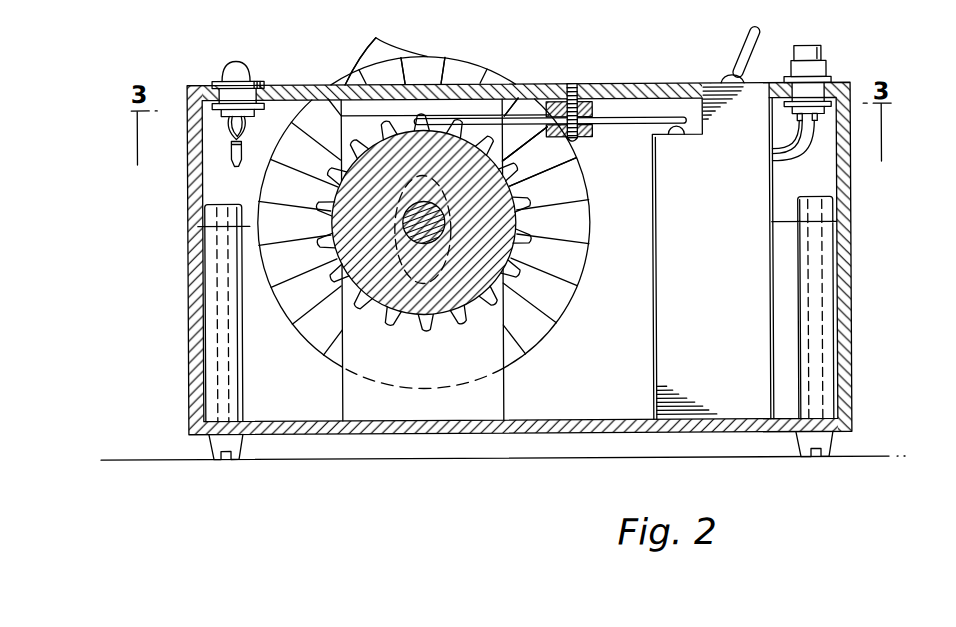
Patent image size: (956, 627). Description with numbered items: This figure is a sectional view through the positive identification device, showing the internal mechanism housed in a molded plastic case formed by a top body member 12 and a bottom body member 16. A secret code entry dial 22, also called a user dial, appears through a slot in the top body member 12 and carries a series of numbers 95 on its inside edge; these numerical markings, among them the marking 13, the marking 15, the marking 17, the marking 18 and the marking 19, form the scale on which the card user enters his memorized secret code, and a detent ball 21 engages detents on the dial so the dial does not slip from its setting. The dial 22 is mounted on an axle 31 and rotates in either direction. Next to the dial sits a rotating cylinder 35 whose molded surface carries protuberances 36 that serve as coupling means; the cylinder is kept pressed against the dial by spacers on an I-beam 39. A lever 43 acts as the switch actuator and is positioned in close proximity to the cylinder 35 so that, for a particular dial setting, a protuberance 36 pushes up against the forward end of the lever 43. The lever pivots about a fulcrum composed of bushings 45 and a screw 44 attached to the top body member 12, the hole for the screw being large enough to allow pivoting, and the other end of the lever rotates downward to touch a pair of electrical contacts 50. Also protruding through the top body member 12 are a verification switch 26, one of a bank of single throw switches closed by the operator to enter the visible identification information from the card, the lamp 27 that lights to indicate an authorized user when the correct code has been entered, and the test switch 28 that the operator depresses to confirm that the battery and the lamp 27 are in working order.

The top body member 12 is at (188, 185).
The bottom body member 16 is at (188, 332).
The secret code entry dial 22 is at (424, 209).
The visible identification information entering means 26 is at (724, 80).
The lamp 27 is at (237, 60).
The test switch 28 is at (818, 56).
The axle 31 is at (441, 245).
The cylinder 35 is at (430, 249).
The protuberances 36 is at (332, 206).
The I-beam 39 is at (494, 373).
The lever 43 is at (438, 113).
The screw 44 is at (573, 86).
The bushings 45 is at (590, 110).
The electrical contacts 50 is at (654, 134).
The numbers 95 is at (384, 62).
The dial indicium 13 is at (548, 184).
The dial indicium 15 is at (524, 129).
The dial indicium 17 is at (464, 70).
The dial indicium 18 is at (423, 70).
The dial indicium 19 is at (382, 71).
The detent ball 21 is at (316, 129).